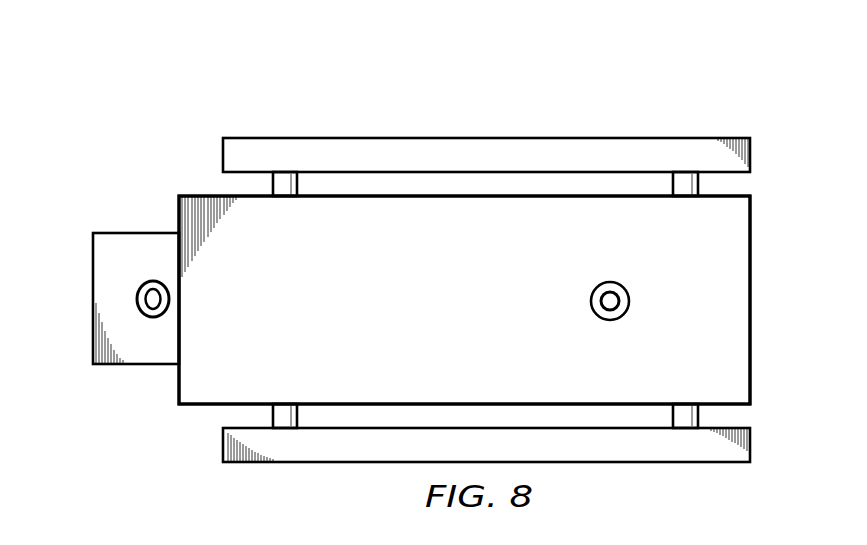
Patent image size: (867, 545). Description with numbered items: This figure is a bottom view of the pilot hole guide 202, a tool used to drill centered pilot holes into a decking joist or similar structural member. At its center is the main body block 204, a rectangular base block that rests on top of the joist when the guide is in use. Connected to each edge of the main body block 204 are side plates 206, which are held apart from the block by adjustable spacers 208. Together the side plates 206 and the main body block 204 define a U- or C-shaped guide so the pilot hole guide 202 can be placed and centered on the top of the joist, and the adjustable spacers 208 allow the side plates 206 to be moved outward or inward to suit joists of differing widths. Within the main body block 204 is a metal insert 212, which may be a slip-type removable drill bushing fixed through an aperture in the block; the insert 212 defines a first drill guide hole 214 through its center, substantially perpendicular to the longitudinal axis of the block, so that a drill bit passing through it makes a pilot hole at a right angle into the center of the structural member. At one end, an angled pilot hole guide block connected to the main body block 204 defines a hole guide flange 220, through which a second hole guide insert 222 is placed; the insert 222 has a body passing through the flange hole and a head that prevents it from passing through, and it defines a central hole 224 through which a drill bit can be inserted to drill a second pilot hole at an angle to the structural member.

The pilot hole guide 202 is at (569, 104).
The main body block 204 is at (190, 380).
The side plates 206 is at (388, 152).
The adjustable spacers 208 is at (699, 184).
The insert 212 is at (628, 286).
The first drill guide hole 214 is at (620, 300).
The hole guide flange 220 is at (140, 232).
The second hole guide insert 222 is at (137, 288).
The hole 224 is at (153, 308).